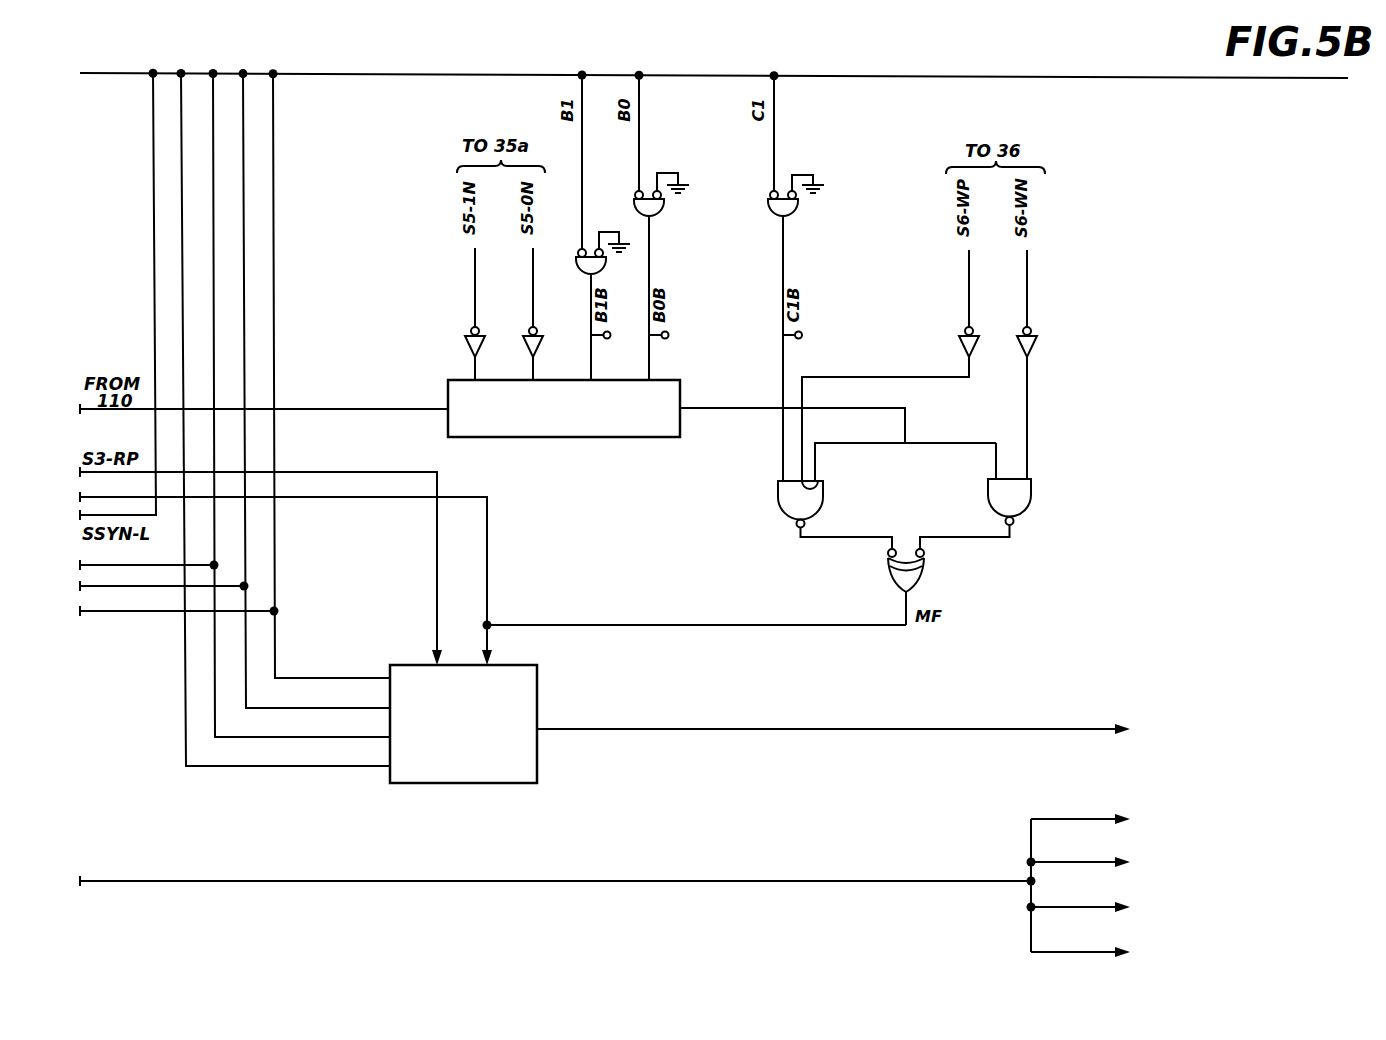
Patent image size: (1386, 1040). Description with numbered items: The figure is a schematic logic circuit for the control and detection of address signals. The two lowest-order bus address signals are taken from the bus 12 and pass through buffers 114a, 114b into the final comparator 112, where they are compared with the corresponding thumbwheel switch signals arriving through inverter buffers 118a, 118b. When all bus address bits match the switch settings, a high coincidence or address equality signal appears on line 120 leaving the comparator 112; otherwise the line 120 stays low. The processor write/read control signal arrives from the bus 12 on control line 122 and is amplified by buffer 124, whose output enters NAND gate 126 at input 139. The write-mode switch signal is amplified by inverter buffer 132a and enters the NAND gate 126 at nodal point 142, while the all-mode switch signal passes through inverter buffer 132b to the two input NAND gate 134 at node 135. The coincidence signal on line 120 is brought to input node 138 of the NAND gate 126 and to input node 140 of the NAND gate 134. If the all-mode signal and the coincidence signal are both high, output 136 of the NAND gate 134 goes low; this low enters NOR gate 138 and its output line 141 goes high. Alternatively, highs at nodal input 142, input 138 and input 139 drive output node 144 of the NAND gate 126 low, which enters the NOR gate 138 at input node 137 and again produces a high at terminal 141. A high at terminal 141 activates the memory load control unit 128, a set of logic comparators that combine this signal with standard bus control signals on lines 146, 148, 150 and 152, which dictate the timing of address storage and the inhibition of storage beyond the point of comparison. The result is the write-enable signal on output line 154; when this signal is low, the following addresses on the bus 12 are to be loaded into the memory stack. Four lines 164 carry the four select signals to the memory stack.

The bus 12 is at (930, 78).
The final comparator 112 is at (560, 437).
The buffer 114a is at (662, 208).
The buffer 114b is at (578, 262).
The inverter buffer 118a is at (536, 340).
The inverter buffer 118b is at (466, 346).
The line 120 is at (694, 408).
The control line 122 is at (776, 140).
The buffer 124 is at (797, 204).
The NAND gate 126 is at (796, 524).
The memory load control unit 128 is at (475, 775).
The inverter buffer 132a is at (960, 346).
The inverter buffer 132b is at (1035, 348).
The two input NAND gate 134 is at (1011, 514).
The node 135 is at (1028, 478).
The output 136 is at (1014, 522).
The input node 137 is at (907, 528).
The NOR gate 138 is at (812, 479).
The input 139 is at (783, 479).
The input node 140 is at (996, 478).
The output line 141 is at (97, 478).
The nodal point 142 is at (823, 490).
The output node 144 is at (763, 544).
The line 146 is at (275, 627).
The line 148 is at (247, 660).
The line 150 is at (214, 687).
The line 152 is at (184, 731).
The output line 154 is at (598, 726).
The four lines 164 is at (530, 882).